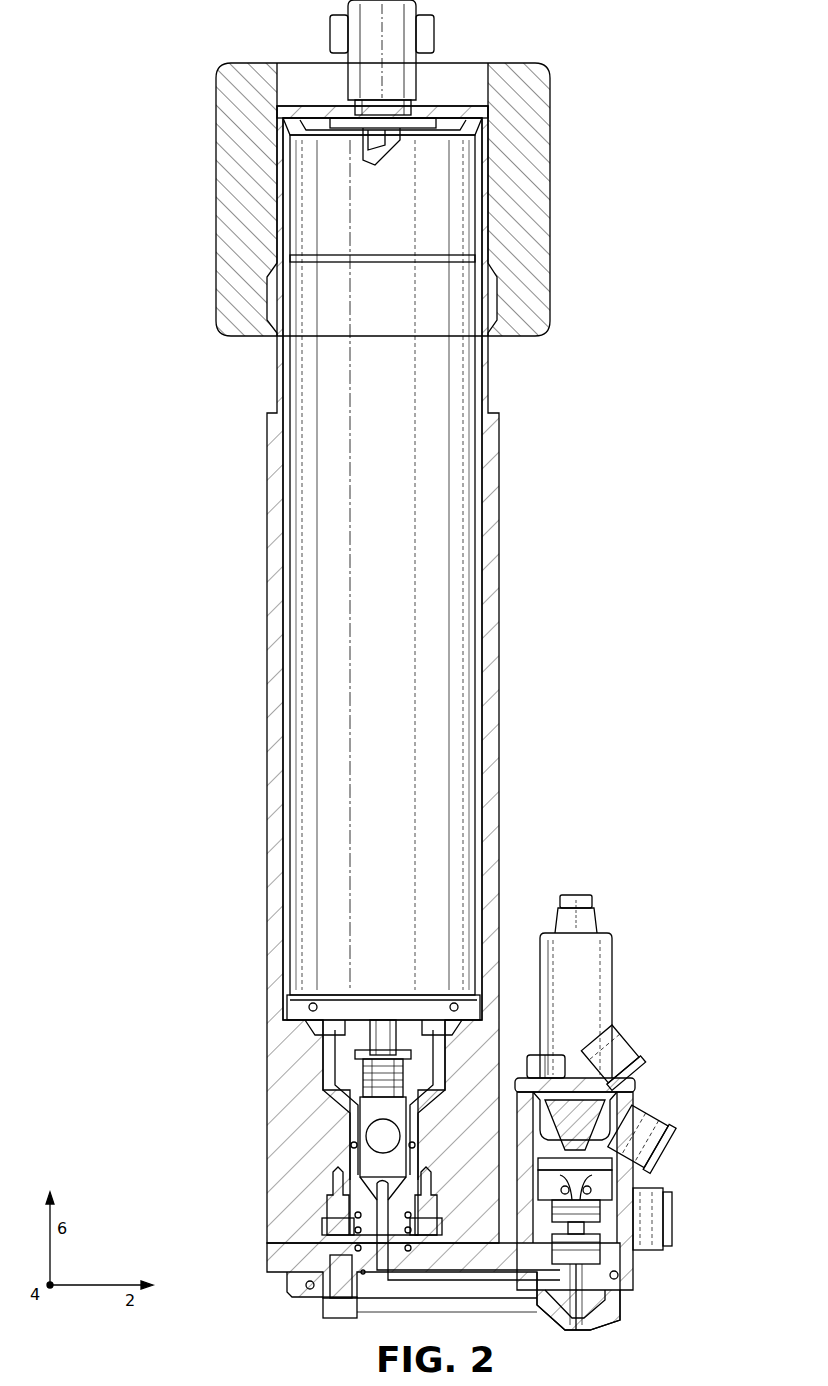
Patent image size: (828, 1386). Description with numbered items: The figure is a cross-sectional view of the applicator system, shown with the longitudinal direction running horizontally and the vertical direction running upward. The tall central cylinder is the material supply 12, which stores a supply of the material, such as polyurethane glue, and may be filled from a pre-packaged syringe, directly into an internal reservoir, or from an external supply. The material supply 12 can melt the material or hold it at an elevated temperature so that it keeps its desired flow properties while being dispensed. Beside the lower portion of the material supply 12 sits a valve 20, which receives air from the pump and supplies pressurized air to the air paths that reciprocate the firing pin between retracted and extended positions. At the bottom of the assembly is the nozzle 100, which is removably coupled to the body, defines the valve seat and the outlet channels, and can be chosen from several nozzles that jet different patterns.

The material supply 12 is at (453, 652).
The valve 20 is at (588, 1000).
The nozzle 100 is at (605, 1312).